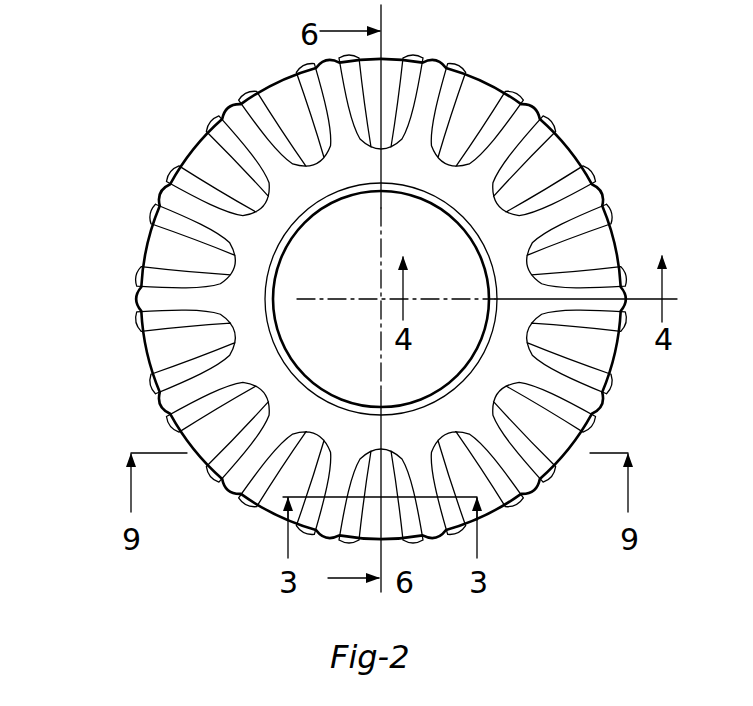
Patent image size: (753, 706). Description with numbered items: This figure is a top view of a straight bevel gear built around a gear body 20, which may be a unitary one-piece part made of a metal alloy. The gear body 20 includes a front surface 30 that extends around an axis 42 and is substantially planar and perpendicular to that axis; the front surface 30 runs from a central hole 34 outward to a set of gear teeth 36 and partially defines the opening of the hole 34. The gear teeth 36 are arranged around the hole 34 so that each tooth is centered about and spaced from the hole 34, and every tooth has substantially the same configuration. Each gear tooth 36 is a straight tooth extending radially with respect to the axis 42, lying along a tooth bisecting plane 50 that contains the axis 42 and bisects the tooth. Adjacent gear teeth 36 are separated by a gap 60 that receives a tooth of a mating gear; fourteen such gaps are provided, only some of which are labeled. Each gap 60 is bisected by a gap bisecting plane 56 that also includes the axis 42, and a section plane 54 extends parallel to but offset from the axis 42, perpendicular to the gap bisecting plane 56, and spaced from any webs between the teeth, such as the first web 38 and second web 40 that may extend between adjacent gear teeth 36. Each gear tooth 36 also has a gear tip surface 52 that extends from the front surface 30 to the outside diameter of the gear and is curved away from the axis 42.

The gear body 20 is at (160, 193).
The front surface 30 is at (250, 262).
The hole 34 is at (350, 258).
The gear teeth 36 is at (613, 373).
The first web 38 is at (552, 125).
The second web 40 is at (203, 158).
The axis 42 is at (381, 300).
The tooth bisecting plane 50 is at (477, 300).
The gear tip surface 52 is at (195, 387).
The section plane 54 is at (333, 542).
The gap bisecting plane 56 is at (381, 371).
The gap 60 is at (272, 508).